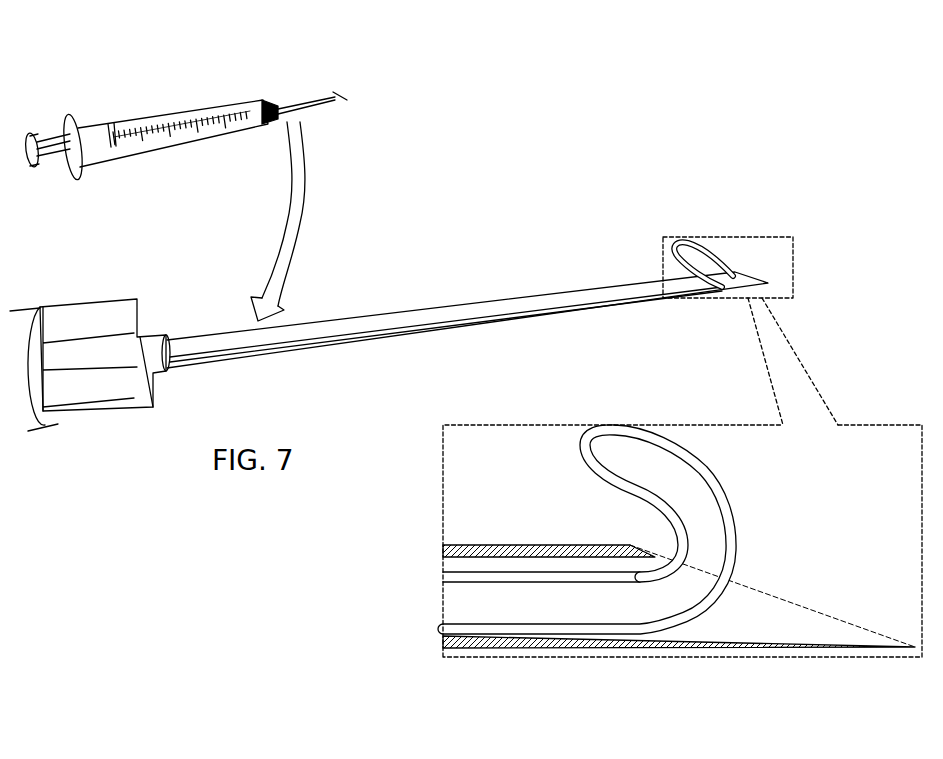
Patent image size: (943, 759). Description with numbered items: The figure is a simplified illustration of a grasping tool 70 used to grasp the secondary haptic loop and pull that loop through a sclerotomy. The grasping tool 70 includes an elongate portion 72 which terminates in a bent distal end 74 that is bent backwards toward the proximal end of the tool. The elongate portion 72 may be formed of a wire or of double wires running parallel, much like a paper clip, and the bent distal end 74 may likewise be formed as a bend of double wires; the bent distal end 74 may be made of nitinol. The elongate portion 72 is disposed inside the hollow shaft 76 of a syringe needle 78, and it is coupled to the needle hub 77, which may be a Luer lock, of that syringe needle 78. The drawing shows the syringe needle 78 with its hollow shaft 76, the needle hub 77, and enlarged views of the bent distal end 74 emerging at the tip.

The grasping tool 70 is at (350, 91).
The elongate portion 72 is at (583, 577).
The bent distal end 74 is at (333, 90).
The hollow shaft 76 is at (310, 103).
The needle hub 77 is at (93, 311).
The syringe needle 78 is at (185, 115).